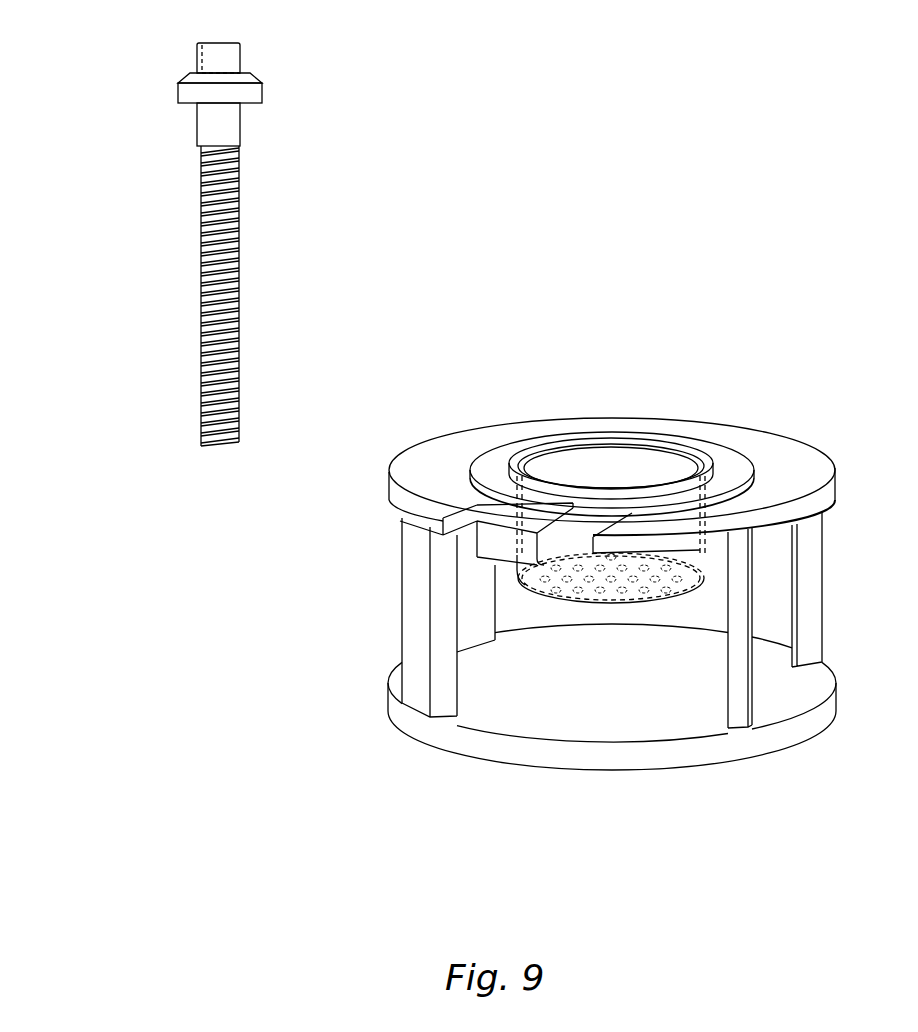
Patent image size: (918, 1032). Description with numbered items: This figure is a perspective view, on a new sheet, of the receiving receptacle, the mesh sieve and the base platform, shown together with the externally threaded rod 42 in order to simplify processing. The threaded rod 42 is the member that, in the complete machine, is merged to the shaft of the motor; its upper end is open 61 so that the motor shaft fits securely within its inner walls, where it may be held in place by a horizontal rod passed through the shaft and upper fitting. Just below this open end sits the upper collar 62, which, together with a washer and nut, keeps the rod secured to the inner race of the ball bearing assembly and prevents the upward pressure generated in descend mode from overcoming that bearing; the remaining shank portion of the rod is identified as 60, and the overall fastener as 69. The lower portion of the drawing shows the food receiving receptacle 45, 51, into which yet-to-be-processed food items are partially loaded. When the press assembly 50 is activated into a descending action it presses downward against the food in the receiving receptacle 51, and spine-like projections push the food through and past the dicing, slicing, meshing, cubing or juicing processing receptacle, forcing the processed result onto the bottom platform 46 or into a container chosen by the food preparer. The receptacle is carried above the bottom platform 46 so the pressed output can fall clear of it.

The fastener 69 is at (197, 50).
The open upper end of the threaded rod 61 is at (215, 53).
The upper collar 62 is at (248, 89).
The shank 60 is at (222, 128).
The threaded rod 42 is at (238, 272).
The press assembly 50 is at (638, 602).
The food receiving receptacle 45 is at (812, 503).
The receiving receptacle 51 is at (697, 603).
The bottom platform 46 is at (693, 705).